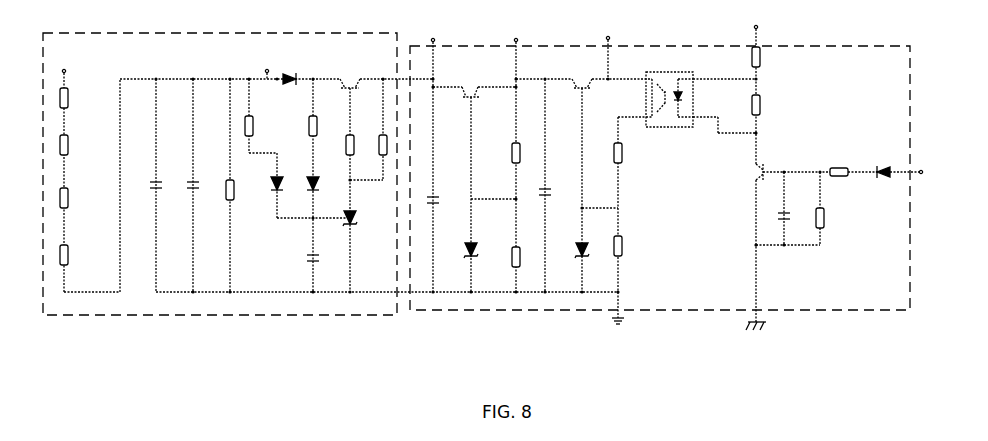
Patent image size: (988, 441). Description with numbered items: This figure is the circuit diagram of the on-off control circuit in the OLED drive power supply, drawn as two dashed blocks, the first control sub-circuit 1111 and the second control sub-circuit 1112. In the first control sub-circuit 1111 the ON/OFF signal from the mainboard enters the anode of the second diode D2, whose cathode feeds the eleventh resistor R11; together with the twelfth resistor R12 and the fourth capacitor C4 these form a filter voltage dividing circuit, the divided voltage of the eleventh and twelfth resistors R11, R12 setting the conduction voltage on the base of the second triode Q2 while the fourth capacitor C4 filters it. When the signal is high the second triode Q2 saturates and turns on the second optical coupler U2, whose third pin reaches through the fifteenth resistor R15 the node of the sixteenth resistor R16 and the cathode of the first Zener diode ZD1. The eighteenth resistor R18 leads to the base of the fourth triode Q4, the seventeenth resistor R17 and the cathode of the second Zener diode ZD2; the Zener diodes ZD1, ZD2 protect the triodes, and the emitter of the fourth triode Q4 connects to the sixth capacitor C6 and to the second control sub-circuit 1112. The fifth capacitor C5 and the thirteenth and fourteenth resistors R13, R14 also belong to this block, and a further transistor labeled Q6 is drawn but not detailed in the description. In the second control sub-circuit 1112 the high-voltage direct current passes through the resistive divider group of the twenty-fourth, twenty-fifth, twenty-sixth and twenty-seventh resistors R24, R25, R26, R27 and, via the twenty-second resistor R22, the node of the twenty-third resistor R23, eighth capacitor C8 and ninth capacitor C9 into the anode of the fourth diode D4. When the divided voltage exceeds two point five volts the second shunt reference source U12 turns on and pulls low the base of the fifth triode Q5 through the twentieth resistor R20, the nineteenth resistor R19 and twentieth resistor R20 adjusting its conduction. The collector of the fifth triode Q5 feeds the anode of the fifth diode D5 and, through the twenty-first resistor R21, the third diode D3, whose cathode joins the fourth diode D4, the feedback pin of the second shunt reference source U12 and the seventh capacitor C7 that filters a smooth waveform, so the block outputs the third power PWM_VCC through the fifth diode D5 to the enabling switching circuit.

The first control sub-circuit 1111 is at (330, 191).
The second control sub-circuit 1112 is at (684, 178).
The twenty-seventh resistor R27 is at (72, 98).
The twenty-sixth resistor R26 is at (72, 145).
The twenty-fifth resistor R25 is at (72, 198).
The twenty-fourth resistor R24 is at (72, 255).
The ninth capacitor C9 is at (159, 187).
The eighth capacitor C8 is at (196, 187).
The twenty-third resistor R23 is at (238, 190).
The twenty-second resistor R22 is at (257, 126).
The twenty-first resistor R21 is at (303, 126).
The twentieth resistor R20 is at (342, 145).
The nineteenth resistor R19 is at (391, 145).
The fourth diode D4 is at (270, 183).
The third diode D3 is at (307, 183).
The fifth diode D5 is at (289, 79).
The second shunt reference source U12 is at (358, 218).
The seventh capacitor C7 is at (305, 259).
The transistor Q6 is at (350, 78).
The fourth triode Q4 is at (470, 85).
The fifth triode Q5 is at (582, 76).
The sixth capacitor C6 is at (437, 195).
The second Zener diode ZD2 is at (465, 254).
The eighteenth resistor R18 is at (505, 153).
The seventeenth resistor R17 is at (524, 262).
The fifth capacitor C5 is at (548, 187).
The first Zener diode ZD1 is at (588, 254).
The fifteenth resistor R15 is at (626, 153).
The sixteenth resistor R16 is at (626, 246).
The second optical coupler U2 is at (669, 93).
The fourteenth resistor R14 is at (765, 57).
The thirteenth resistor R13 is at (765, 105).
The second triode Q2 is at (751, 172).
The eleventh resistor R11 is at (839, 166).
The second diode D2 is at (883, 177).
The fourth capacitor C4 is at (790, 216).
The twelfth resistor R12 is at (828, 218).